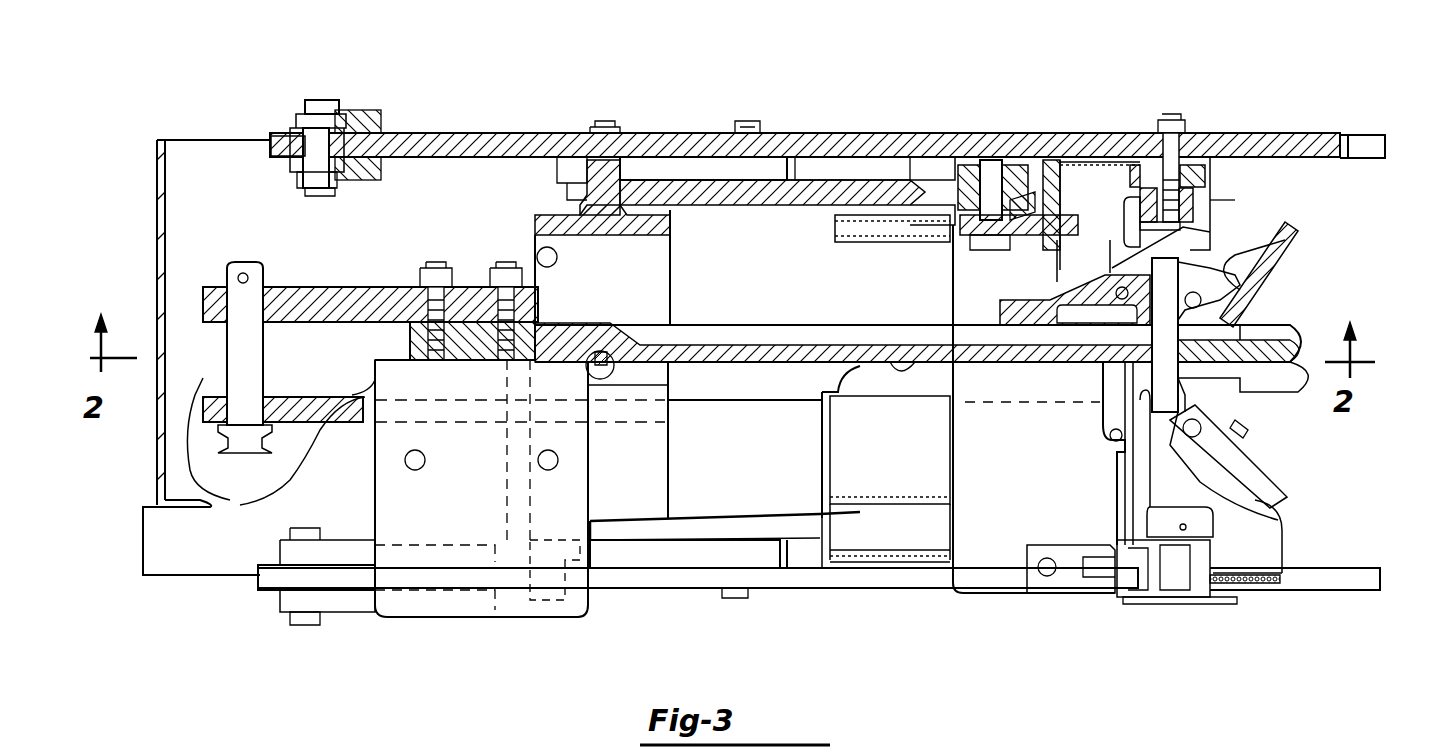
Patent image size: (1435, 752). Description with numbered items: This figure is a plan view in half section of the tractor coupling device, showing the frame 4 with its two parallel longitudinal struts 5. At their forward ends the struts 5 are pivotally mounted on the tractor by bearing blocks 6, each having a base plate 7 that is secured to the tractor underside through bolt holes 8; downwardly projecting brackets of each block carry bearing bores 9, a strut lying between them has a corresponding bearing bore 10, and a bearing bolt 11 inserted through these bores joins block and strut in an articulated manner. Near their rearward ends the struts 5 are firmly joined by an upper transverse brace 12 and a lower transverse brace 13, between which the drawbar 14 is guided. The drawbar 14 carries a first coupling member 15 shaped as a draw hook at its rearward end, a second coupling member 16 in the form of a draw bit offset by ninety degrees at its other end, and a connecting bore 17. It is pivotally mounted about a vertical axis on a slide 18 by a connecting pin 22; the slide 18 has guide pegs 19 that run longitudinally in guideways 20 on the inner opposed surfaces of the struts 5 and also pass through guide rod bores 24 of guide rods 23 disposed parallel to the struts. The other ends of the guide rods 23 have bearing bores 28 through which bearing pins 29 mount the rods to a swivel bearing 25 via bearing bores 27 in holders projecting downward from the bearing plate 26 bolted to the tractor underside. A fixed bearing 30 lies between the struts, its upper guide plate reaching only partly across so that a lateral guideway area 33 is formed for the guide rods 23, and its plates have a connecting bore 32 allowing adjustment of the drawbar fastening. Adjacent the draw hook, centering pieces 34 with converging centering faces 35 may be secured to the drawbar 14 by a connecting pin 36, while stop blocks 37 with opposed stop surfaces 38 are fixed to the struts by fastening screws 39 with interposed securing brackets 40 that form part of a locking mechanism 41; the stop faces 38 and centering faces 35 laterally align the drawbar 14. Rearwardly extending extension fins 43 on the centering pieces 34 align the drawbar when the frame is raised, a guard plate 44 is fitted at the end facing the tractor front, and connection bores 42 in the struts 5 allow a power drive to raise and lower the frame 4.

The frame 4 is at (967, 135).
The longitudinal struts 5 is at (804, 140).
The bearing blocks 6 is at (378, 118).
The base plate 7 is at (385, 468).
The bolt holes 8 is at (538, 460).
The bearing bores 9 is at (332, 118).
The bearing bore 10 is at (312, 192).
The bearing bolts 11 is at (338, 125).
The upper transverse brace 12 is at (1250, 522).
The lower transverse brace 13 is at (1212, 203).
The drawbar 14 is at (742, 332).
The first coupling member 15 is at (1302, 387).
The second coupling member 16 is at (205, 330).
The connecting bore 17 is at (612, 370).
The slide 18 is at (535, 204).
The guide pegs 19 is at (585, 150).
The guideways 20 is at (664, 168).
The connecting pin 22 is at (606, 368).
The guide rods 23 is at (842, 195).
The guide rod bores 24 is at (618, 160).
The swivel bearing 25 is at (1003, 540).
The bearing plate 26 is at (1073, 570).
The bearing bores 27 is at (1010, 218).
The bearing bores 28 is at (1035, 202).
The bearing pins 29 is at (988, 185).
The fixed bearing 30 is at (927, 180).
The connecting bore 32 is at (918, 362).
The lateral guideway area 33 is at (895, 222).
The centering pieces 34 is at (1293, 238).
The centering faces 35 is at (1112, 300).
The connecting pin 36 is at (1250, 318).
The stop blocks 37 is at (1215, 210).
The stop surfaces 38 is at (1243, 300).
The fastening screws 39 is at (1172, 118).
The securing brackets 40 is at (1138, 168).
The locking mechanism 41 is at (1235, 592).
The connection bores 42 is at (1378, 134).
The extension fins 43 is at (1272, 477).
The guard plate 44 is at (240, 543).